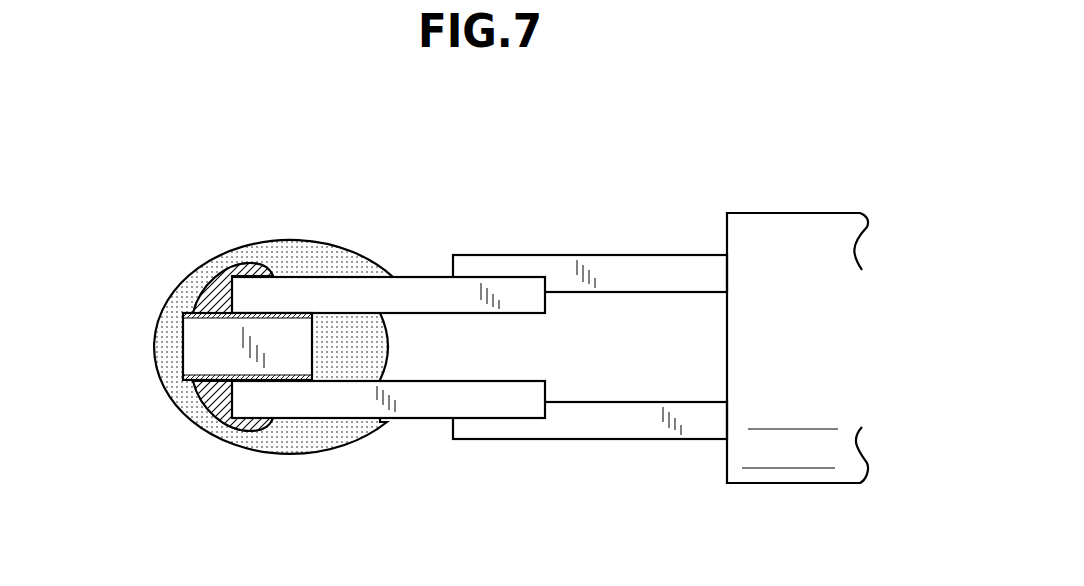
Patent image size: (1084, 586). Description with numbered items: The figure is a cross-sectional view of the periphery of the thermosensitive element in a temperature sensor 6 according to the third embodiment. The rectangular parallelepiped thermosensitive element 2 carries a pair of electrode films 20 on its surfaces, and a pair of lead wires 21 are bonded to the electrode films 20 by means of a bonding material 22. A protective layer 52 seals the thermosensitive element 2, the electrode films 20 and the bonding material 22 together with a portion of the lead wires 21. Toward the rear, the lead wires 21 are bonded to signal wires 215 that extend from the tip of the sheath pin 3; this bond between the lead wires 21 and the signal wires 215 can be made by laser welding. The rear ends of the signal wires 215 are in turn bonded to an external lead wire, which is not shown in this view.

The temperature sensor 6 is at (479, 317).
The protective layer 52 is at (315, 265).
The electrode films 20 is at (197, 270).
The bonding material 22 is at (243, 268).
The signal wires 215 is at (617, 268).
The lead wires 21 is at (420, 293).
The thermosensitive element 2 is at (200, 348).
The sheath pin 3 is at (795, 442).